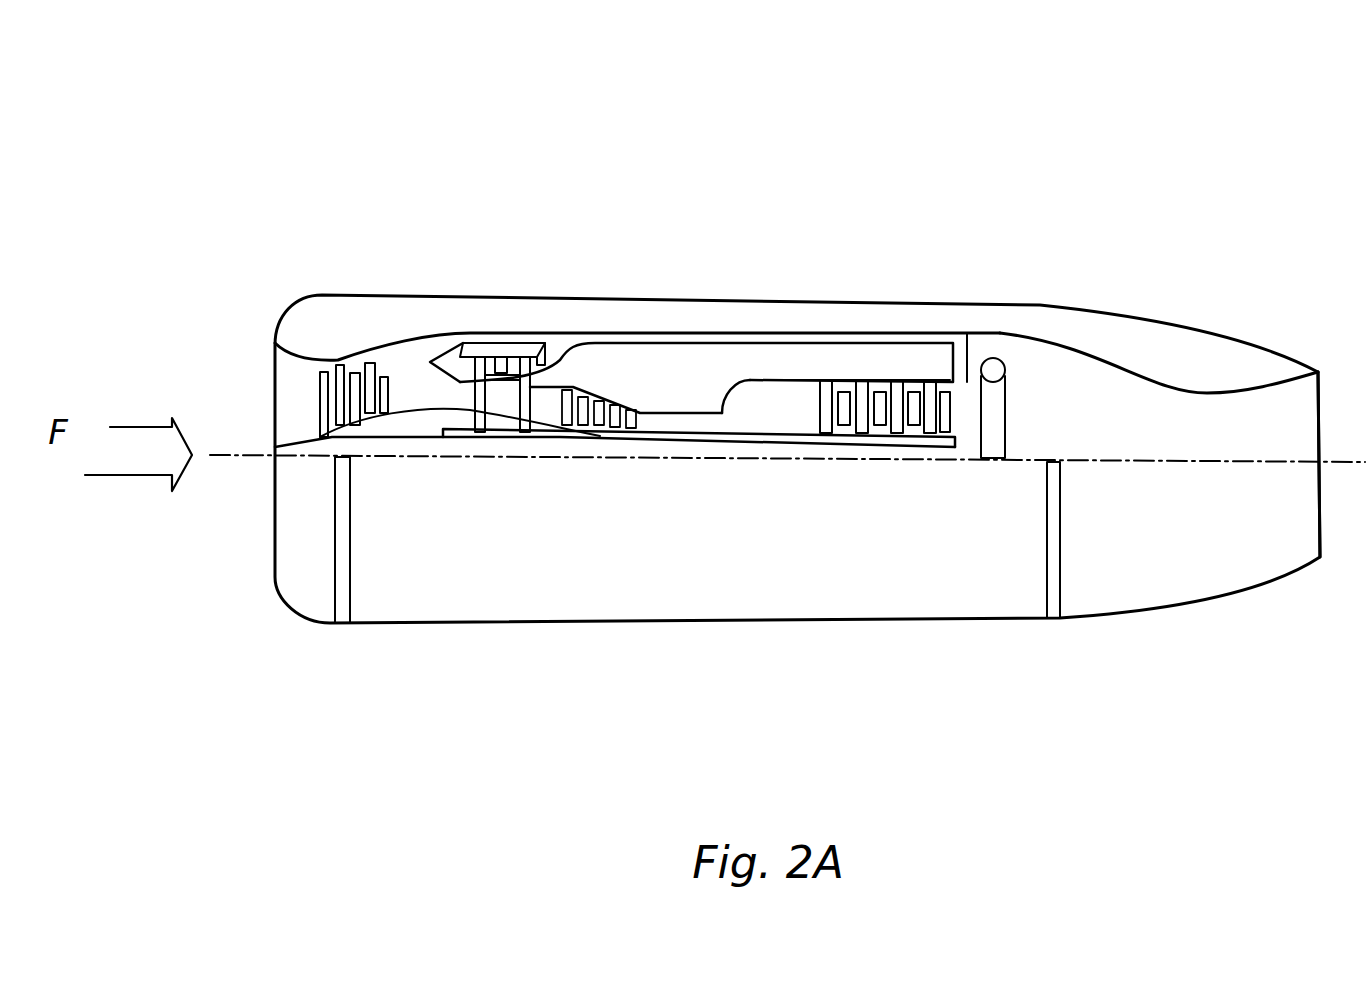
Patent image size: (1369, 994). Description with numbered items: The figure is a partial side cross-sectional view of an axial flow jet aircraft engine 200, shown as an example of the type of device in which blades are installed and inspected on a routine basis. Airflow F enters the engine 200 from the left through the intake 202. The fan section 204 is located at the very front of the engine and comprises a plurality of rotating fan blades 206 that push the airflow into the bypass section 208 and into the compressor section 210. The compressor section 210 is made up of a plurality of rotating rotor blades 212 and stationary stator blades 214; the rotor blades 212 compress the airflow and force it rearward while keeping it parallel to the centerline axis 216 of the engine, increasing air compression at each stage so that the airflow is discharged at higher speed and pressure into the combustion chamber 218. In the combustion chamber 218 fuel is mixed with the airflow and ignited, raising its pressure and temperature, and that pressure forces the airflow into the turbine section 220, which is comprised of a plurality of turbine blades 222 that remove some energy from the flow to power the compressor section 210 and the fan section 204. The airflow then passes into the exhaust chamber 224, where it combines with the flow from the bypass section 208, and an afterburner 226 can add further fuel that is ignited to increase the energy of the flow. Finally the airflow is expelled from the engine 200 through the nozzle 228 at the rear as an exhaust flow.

The axial flow jet aircraft engine 200 is at (1055, 117).
The intake 202 is at (243, 560).
The fan section 204 is at (302, 400).
The fan blades 206 is at (340, 362).
The bypass section 208 is at (460, 390).
The compressor section 210 is at (460, 333).
The rotor blades 212 is at (575, 350).
The stator blades 214 is at (618, 400).
The centerline axis 216 is at (688, 447).
The combustion chamber 218 is at (730, 410).
The turbine section 220 is at (817, 418).
The turbine blades 222 is at (942, 430).
The exhaust chamber 224 is at (967, 340).
The afterburner 226 is at (997, 358).
The nozzle 228 is at (1267, 427).